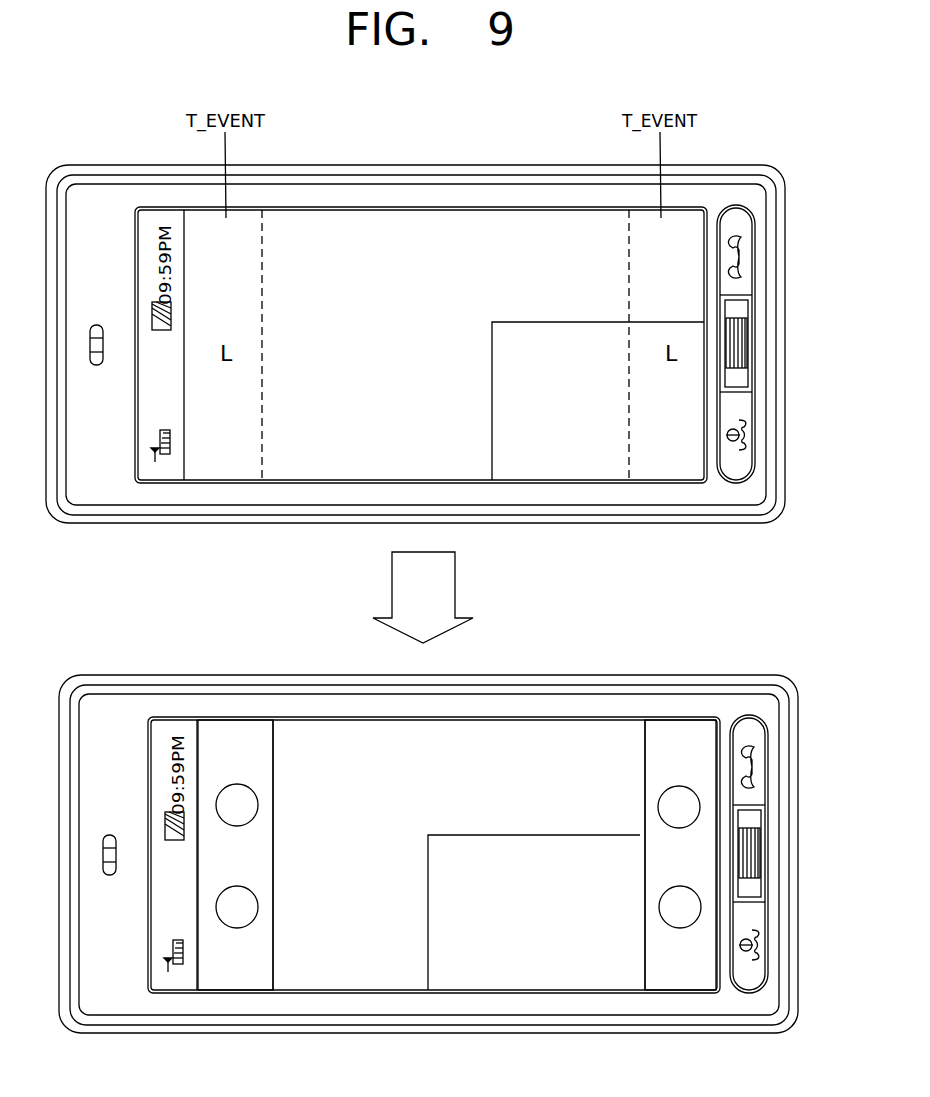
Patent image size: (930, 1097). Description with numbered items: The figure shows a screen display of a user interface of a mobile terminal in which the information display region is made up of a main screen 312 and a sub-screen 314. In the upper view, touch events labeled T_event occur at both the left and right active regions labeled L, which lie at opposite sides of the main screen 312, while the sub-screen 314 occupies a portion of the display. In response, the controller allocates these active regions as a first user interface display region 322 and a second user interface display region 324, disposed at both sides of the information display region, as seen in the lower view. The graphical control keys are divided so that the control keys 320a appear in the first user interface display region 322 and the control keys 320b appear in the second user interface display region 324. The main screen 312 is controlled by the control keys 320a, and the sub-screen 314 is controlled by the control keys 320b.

The main screen 312 is at (404, 218).
The sub-screen 314 is at (531, 331).
The control keys 320a is at (218, 893).
The control keys 320b is at (698, 893).
The first user interface display region 322 is at (240, 733).
The second user interface display region 324 is at (678, 733).